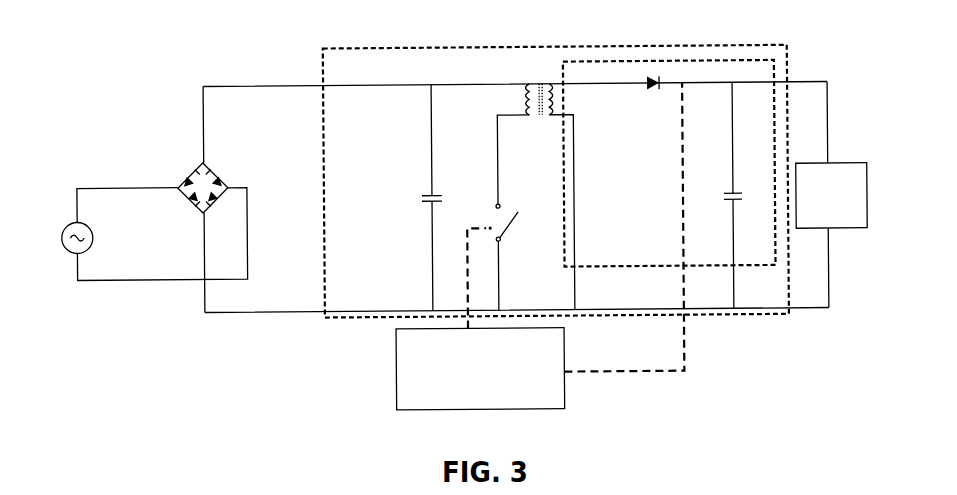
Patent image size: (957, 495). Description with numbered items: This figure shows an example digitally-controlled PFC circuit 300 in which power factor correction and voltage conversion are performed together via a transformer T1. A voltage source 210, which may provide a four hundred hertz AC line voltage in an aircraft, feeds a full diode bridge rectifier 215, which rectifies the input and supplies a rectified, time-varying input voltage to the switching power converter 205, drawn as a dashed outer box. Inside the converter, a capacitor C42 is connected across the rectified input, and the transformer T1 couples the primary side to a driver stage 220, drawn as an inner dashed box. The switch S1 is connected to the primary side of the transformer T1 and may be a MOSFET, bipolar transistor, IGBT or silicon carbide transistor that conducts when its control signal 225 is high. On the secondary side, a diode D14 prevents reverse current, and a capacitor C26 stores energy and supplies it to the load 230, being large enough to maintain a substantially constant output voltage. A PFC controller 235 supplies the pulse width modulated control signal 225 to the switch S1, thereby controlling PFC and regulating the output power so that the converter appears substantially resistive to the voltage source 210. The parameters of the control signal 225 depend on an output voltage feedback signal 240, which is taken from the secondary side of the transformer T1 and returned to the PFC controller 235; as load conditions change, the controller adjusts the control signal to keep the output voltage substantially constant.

The PFC circuit 300 is at (464, 226).
The switching power converter 205 is at (580, 46).
The voltage source 210 is at (91, 233).
The diode bridge rectifier 215 is at (222, 156).
The driver stage 220 is at (725, 62).
The control signal 225 is at (467, 282).
The load 230 is at (831, 194).
The PFC controller 235 is at (409, 408).
The feedback signal 240 is at (617, 372).
The capacitor C42 is at (451, 197).
The capacitor C26 is at (752, 195).
The transformer T1 is at (536, 186).
The switch S1 is at (490, 255).
The diode D14 is at (646, 95).